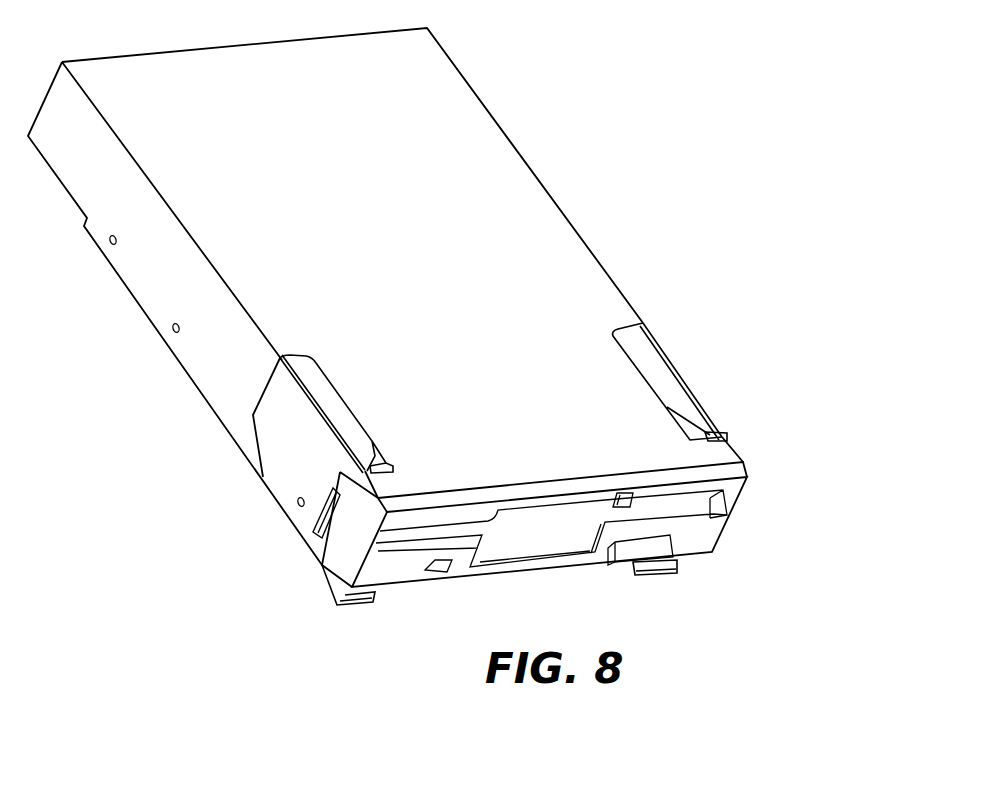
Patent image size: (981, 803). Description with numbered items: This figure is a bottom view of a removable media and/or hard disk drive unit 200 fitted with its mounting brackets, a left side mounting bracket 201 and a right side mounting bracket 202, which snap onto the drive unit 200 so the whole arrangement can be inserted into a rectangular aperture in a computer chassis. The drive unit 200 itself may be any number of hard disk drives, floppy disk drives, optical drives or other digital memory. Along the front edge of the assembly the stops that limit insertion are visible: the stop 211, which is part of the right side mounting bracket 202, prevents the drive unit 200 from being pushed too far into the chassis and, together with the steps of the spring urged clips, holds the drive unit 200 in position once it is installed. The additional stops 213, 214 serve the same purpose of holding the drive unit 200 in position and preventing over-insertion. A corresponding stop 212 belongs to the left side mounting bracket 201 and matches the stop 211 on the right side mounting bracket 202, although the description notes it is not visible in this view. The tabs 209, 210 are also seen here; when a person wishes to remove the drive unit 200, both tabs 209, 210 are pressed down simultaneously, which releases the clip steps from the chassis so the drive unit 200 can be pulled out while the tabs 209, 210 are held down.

The drive unit 200 is at (379, 265).
The left side mounting bracket 201 is at (652, 362).
The right side mounting bracket 202 is at (321, 465).
The tab 209 is at (658, 575).
The tab 210 is at (362, 612).
The stop 211 is at (320, 530).
The stop 212 is at (761, 453).
The additional stop 213 is at (717, 432).
The additional stop 214 is at (388, 466).